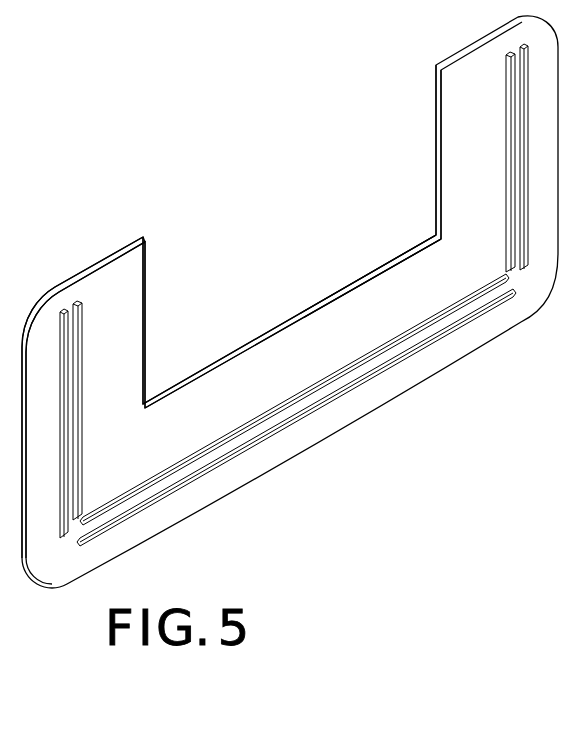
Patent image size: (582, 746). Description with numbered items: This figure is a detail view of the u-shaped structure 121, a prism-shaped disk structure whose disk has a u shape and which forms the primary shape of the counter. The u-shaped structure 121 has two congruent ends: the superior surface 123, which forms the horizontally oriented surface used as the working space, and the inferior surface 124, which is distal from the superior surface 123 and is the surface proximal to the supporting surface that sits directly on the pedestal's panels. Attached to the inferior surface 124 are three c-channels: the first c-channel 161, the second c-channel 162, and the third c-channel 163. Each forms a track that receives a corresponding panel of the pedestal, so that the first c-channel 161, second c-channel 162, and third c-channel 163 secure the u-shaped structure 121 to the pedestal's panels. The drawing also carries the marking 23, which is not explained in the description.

The mounting plate 23 is at (282, 302).
The u-shaped structure 121 is at (107, 282).
The superior surface 123 is at (302, 307).
The inferior surface 124 is at (384, 285).
The first c-channel 161 is at (513, 107).
The second c-channel 162 is at (390, 368).
The third c-channel 163 is at (80, 360).